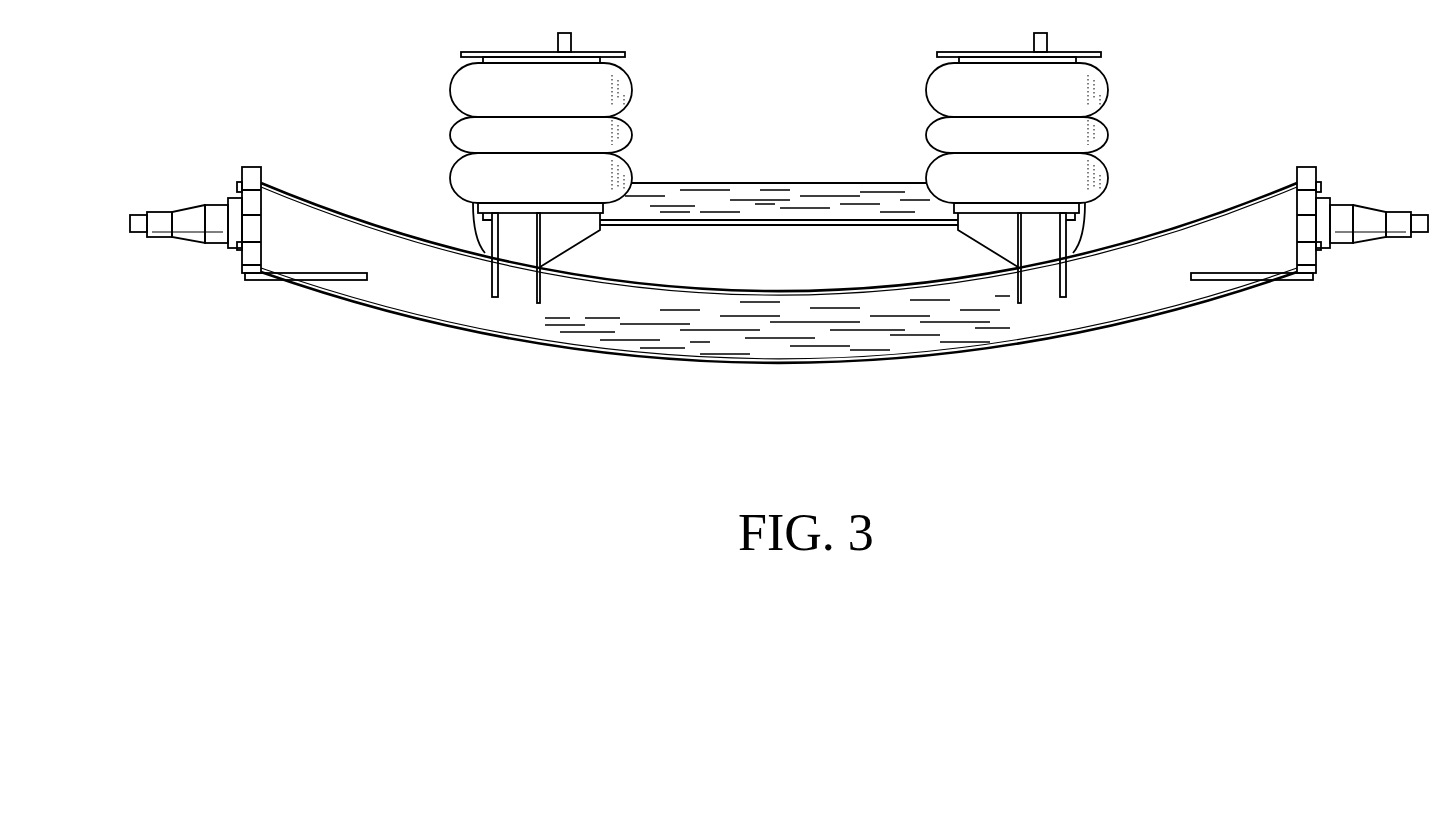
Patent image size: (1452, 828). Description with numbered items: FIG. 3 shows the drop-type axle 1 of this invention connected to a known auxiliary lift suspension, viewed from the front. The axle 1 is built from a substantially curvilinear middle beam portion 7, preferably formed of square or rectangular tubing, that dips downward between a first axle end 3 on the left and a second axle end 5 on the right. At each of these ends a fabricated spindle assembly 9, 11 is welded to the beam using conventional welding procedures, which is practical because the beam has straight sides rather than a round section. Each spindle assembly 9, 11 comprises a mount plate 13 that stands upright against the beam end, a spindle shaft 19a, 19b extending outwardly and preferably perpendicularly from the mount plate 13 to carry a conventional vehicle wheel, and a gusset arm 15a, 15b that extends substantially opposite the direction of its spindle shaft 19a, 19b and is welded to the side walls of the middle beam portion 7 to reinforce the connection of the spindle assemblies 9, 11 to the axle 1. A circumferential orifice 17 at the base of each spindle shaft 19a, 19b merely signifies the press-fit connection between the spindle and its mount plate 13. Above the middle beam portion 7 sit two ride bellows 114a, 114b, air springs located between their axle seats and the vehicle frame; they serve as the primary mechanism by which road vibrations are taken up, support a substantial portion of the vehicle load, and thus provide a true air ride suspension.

The axle 1 is at (680, 398).
The first axle end 3 is at (272, 208).
The second axle end 5 is at (1287, 205).
The middle beam portion 7 is at (855, 345).
The spindle assembly 9 is at (173, 200).
The spindle assembly 11 is at (1388, 219).
The mount plate 13 is at (249, 256).
The gusset arm 15a is at (288, 278).
The gusset arm 15b is at (1261, 278).
The circumferential orifice 17 is at (237, 250).
The spindle shaft 19a is at (160, 229).
The spindle shaft 19b is at (1371, 233).
The ride bellows 114a is at (572, 149).
The ride bellows 114b is at (1048, 149).